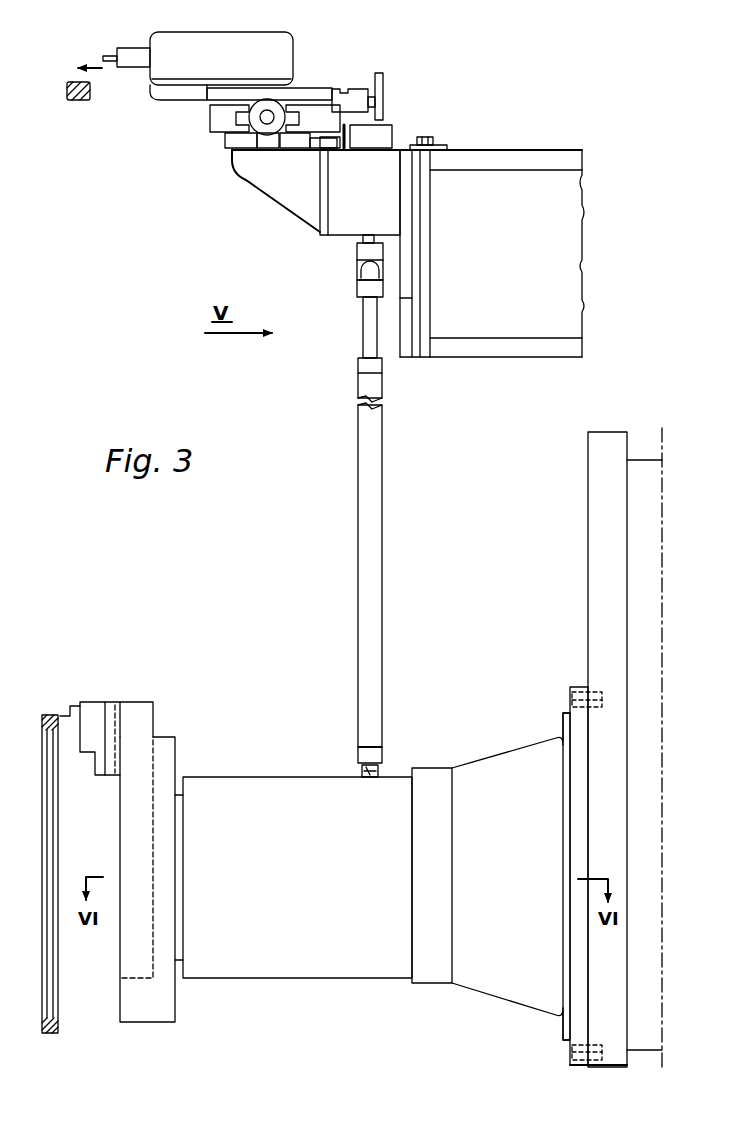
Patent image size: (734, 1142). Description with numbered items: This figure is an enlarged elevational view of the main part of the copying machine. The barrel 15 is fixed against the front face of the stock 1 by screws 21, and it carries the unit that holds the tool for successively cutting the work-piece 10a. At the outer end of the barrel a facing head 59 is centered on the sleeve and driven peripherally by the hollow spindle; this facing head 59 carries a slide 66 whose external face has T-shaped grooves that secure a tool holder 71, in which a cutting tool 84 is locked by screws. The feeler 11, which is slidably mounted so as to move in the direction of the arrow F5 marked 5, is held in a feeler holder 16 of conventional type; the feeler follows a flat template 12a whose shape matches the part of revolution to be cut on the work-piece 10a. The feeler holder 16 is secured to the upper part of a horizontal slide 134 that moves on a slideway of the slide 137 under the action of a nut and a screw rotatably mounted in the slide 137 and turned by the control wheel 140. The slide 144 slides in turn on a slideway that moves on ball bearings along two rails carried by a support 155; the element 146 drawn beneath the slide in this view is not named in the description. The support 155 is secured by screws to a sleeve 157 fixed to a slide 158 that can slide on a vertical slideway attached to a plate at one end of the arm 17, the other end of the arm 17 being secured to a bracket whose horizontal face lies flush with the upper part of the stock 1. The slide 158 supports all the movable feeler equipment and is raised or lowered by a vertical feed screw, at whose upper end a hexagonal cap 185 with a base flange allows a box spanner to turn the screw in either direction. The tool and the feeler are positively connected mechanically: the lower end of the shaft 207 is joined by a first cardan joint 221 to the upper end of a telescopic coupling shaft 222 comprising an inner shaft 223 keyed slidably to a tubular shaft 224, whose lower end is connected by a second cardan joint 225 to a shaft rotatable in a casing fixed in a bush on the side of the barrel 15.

The stock 1 is at (602, 524).
The arrow F5 5 is at (84, 56).
The work-piece 10a is at (44, 714).
The feeler 11 is at (108, 48).
The flat template 12a is at (76, 100).
The barrel 15 is at (388, 876).
The feeler holder 16 is at (213, 43).
The arm 17 is at (540, 160).
The screws 21 is at (590, 1066).
The facing head 59 is at (166, 1013).
The slide 66 is at (145, 712).
The tool holder 71 is at (96, 705).
The cutting tool 84 is at (72, 705).
The horizontal slide 134 is at (170, 97).
The slide 137 is at (362, 88).
The control wheel 140 is at (383, 82).
The slide 144 is at (205, 129).
The roller 146 is at (252, 131).
The support 155 is at (270, 194).
The sleeve 157 is at (360, 192).
The slide 158 is at (404, 261).
The cap 185 is at (432, 137).
The shaft 207 is at (362, 239).
The first cardan joint 221 is at (356, 267).
The telescopic coupling shaft 222 is at (355, 432).
The inner shaft 223 is at (364, 319).
The tubular shaft 224 is at (360, 512).
The second cardan joint 225 is at (384, 768).